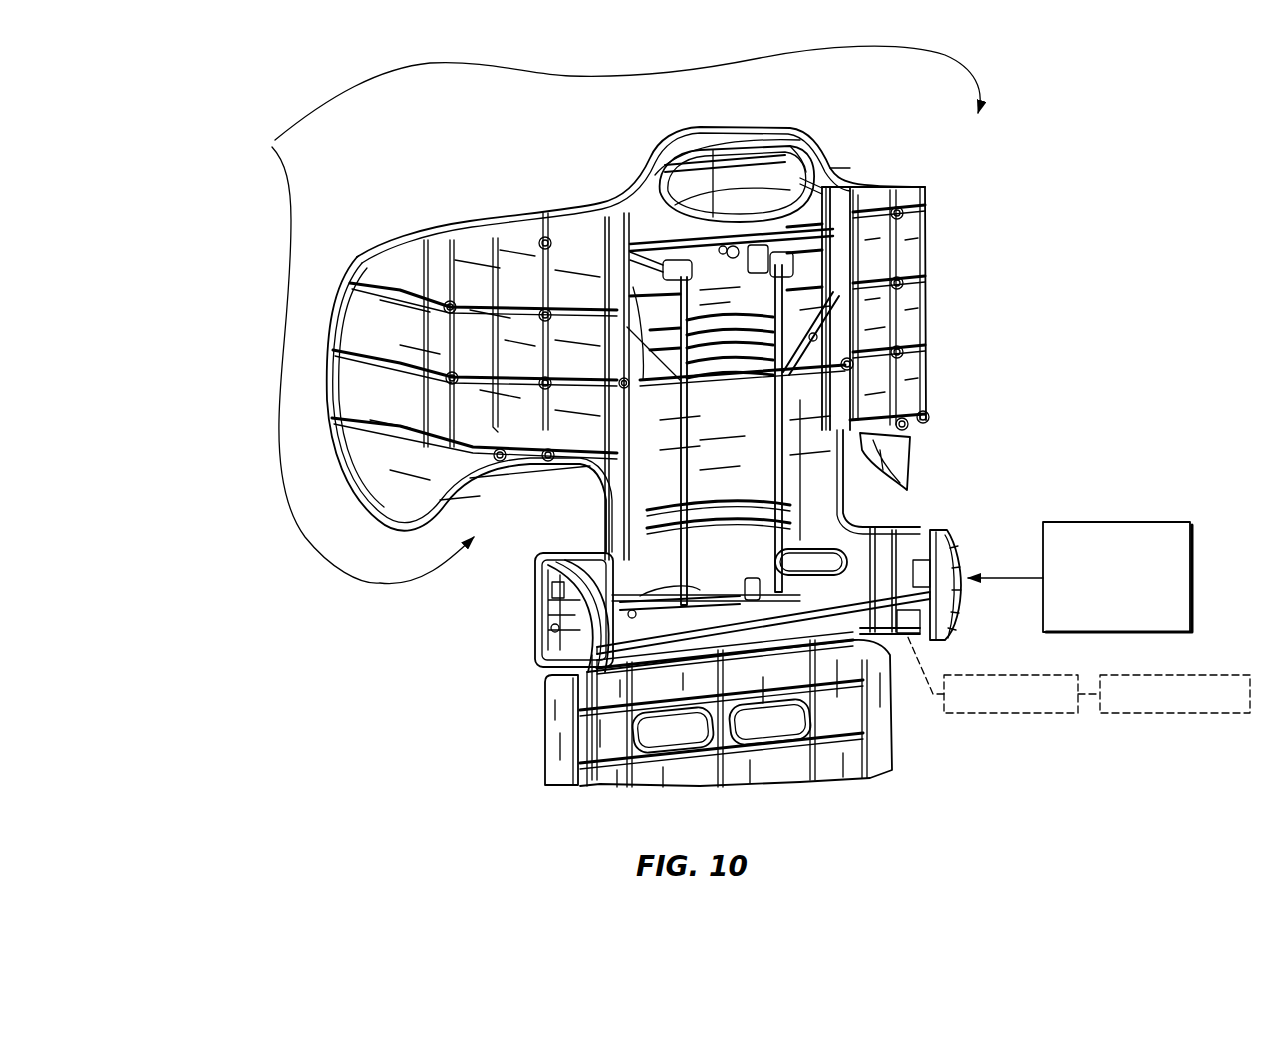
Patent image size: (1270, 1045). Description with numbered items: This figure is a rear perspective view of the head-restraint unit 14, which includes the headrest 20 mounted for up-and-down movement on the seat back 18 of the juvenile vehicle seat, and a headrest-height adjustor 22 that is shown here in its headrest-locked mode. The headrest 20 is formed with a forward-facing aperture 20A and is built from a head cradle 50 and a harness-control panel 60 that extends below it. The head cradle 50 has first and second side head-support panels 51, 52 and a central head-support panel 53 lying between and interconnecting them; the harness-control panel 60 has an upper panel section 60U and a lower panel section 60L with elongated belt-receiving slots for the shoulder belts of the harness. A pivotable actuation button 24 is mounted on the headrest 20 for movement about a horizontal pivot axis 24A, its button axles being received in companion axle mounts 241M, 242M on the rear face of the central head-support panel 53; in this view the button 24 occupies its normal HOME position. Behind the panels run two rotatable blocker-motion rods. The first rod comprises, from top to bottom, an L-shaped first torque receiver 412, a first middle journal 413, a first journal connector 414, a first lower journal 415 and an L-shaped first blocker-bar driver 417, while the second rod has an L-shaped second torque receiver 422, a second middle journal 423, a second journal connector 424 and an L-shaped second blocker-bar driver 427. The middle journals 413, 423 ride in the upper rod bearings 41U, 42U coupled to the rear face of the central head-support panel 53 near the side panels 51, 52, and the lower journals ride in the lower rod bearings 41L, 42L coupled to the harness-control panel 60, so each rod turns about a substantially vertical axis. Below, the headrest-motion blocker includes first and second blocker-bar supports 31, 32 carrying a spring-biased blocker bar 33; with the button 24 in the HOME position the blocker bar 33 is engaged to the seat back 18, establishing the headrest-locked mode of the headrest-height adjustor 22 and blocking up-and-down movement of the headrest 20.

The head-restraint unit 14 is at (426, 172).
The seat back 18 is at (1173, 715).
The headrest 20 is at (330, 648).
The forward-facing aperture 20A is at (782, 185).
The headrest-height adjustor 22 is at (1140, 522).
The pivotable actuation button 24 is at (705, 162).
The horizontal pivot axis 24A is at (903, 142).
The axle mount 241M is at (812, 128).
The axle mount 242M is at (653, 170).
The first blocker-bar support 31 is at (953, 524).
The second blocker-bar support 32 is at (618, 578).
The blocker bar 33 is at (535, 660).
The first upper rod bearing 41U is at (835, 272).
The first lower rod bearing 41L is at (776, 590).
The second upper rod bearing 42U is at (937, 141).
The second lower rod bearing 42L is at (690, 598).
The head cradle 50 is at (313, 170).
The first side head-support panel 51 is at (936, 200).
The second side head-support panel 52 is at (355, 255).
The central head-support panel 53 is at (560, 472).
The harness-control panel 60 is at (452, 693).
The upper panel section 60U is at (518, 623).
The lower panel section 60L is at (534, 746).
The L-shaped first torque receiver 412 is at (611, 275).
The first middle journal 413 is at (620, 385).
The first journal connector 414 is at (691, 460).
The first lower journal 415 is at (794, 562).
The L-shaped first blocker-bar driver 417 is at (622, 655).
The L-shaped second torque receiver 422 is at (872, 205).
The second middle journal 423 is at (760, 350).
The second journal connector 424 is at (775, 412).
The L-shaped second blocker-bar driver 427 is at (882, 578).